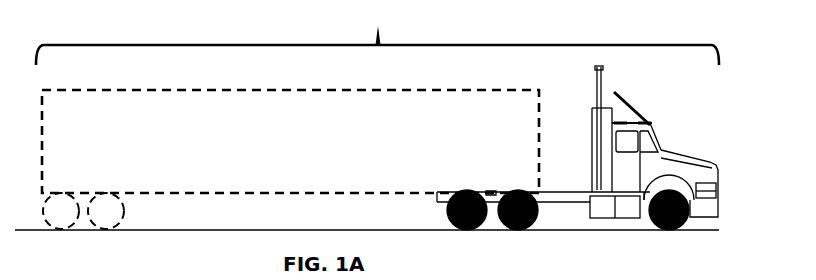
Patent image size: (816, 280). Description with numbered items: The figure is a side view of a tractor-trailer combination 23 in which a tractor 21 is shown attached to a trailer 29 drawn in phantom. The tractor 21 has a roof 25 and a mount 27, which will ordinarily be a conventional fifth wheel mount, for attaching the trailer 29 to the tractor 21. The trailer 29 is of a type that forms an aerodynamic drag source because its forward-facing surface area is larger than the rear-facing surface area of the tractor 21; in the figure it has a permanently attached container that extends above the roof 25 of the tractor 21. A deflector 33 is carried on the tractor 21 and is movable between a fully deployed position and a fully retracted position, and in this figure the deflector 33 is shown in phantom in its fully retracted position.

The tractor 21 is at (697, 155).
The tractor-trailer combination 23 is at (377, 36).
The roof 25 is at (616, 122).
The mount 27 is at (490, 193).
The trailer 29 is at (211, 89).
The deflector 33 is at (628, 100).